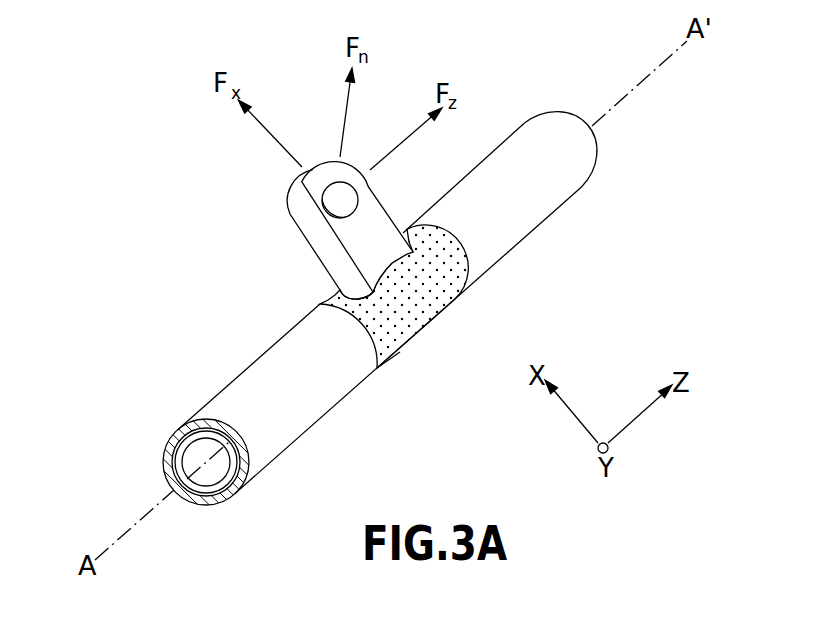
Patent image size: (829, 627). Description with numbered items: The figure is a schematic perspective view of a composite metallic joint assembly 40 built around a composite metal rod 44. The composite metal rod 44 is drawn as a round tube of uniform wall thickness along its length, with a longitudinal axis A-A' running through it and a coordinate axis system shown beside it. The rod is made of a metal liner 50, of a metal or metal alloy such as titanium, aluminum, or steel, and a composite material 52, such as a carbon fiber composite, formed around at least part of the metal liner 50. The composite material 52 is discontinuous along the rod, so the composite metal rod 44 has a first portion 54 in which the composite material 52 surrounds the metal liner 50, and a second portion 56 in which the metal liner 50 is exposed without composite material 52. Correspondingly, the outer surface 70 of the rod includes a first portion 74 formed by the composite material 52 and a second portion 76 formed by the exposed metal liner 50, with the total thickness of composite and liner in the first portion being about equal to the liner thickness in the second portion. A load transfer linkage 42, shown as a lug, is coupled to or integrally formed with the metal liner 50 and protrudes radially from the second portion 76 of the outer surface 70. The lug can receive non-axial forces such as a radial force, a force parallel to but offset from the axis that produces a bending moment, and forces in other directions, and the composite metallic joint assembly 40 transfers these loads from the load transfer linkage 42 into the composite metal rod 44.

The composite metallic joint assembly 40 is at (238, 248).
The load transfer linkage 42 is at (314, 240).
The composite metal rod 44 is at (130, 493).
The metal liner 50 is at (222, 489).
The composite material 52 is at (162, 467).
The first portion 54 is at (557, 236).
The second portion 56 is at (470, 312).
The outer surface 70 is at (534, 198).
The first portion of the outer surface 74 is at (523, 125).
The second portion of the outer surface 76 is at (385, 365).